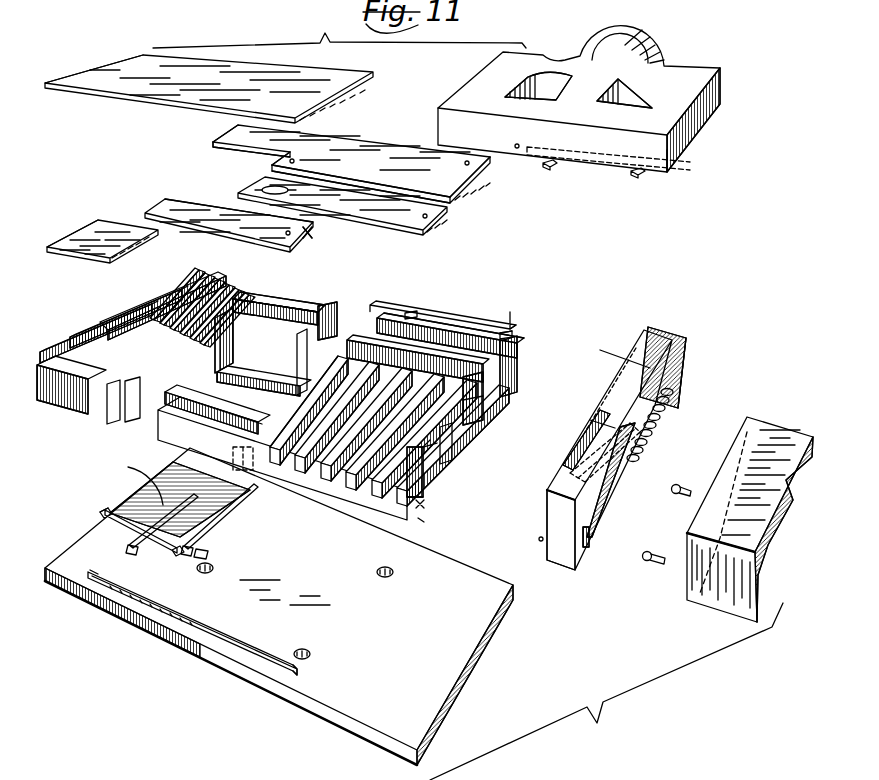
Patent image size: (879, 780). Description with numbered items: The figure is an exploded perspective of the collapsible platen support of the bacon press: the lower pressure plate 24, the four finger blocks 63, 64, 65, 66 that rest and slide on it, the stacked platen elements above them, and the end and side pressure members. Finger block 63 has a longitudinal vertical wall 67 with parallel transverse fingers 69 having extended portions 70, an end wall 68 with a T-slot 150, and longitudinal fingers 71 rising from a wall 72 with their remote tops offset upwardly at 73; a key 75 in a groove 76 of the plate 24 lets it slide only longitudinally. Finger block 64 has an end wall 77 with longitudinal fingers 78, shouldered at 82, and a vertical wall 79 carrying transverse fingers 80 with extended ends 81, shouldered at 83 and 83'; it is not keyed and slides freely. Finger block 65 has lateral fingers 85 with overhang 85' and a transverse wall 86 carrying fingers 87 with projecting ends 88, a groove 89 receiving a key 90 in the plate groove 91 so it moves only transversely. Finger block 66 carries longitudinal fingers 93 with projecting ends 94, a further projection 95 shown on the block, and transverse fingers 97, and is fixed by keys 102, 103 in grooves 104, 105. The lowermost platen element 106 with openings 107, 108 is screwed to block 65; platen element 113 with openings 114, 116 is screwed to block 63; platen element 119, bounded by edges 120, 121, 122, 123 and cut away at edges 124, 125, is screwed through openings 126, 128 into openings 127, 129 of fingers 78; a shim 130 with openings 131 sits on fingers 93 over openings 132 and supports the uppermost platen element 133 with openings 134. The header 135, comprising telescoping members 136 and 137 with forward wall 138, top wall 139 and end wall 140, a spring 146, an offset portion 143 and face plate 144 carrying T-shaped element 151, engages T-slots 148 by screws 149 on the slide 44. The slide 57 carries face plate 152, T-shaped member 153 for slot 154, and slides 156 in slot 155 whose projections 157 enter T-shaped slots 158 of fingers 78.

The lower pressure plate 24 is at (279, 606).
The plate 44 is at (720, 606).
The slide 57 is at (579, 99).
The finger block 63 is at (424, 504).
The finger block 64 is at (517, 365).
The finger block 65 is at (238, 290).
The finger block 66 is at (92, 421).
The vertical wall 67 is at (417, 500).
The end wall 68 is at (427, 480).
The fingers 69 is at (437, 443).
The extended portion 70 is at (430, 440).
The fingers 71 is at (175, 410).
The wall 72 is at (233, 452).
The offset 73 is at (214, 406).
The key 75 is at (263, 647).
The groove 76 is at (293, 663).
The end wall 77 is at (516, 330).
The fingers 78 is at (450, 323).
The vertical wall 79 is at (483, 392).
The fingers 80 is at (483, 405).
The extended end 81 is at (455, 428).
The shoulder 82 is at (403, 308).
The shoulder 83 is at (393, 401).
The shoulder 83' is at (317, 377).
The fingers 85 is at (202, 295).
The overhang 85' is at (166, 297).
The transverse wall 86 is at (222, 344).
The fingers 87 is at (285, 306).
The projecting ends 88 is at (332, 312).
The groove 89 is at (222, 355).
The key 90 is at (227, 515).
The groove 91 is at (207, 550).
The fingers 93 is at (87, 345).
The projecting ends 94 is at (125, 405).
The post 95 is at (107, 390).
The fingers 97 is at (140, 313).
The key 102 is at (107, 517).
The key 103 is at (163, 480).
The groove 104 is at (127, 527).
The groove 105 is at (190, 507).
The platen element 106 is at (165, 200).
The opening 107 is at (186, 200).
The openings 108 is at (306, 232).
The platen element 113 is at (436, 226).
The opening 114 is at (432, 216).
The openings 116 is at (291, 193).
The platen element 119 is at (478, 178).
The inner edge 120 is at (377, 185).
The outer edge 121 is at (388, 143).
The end edge 122 is at (460, 186).
The end edge 123 is at (215, 135).
The longitudinal edge 124 is at (224, 144).
The transverse edge 125 is at (277, 159).
The openings 126 is at (464, 163).
The openings 127 is at (514, 329).
The openings 128 is at (296, 161).
The openings 129 is at (436, 318).
The shim 130 is at (108, 222).
The openings 131 is at (80, 223).
The openings 132 is at (55, 366).
The platen element 133 is at (125, 51).
The openings 134 is at (72, 80).
The header 135 is at (640, 350).
The member 136 is at (561, 574).
The member 137 is at (676, 332).
The forward wall 138 is at (598, 420).
The top wall 139 is at (628, 378).
The end wall 140 is at (686, 365).
The offset portion 143 is at (562, 480).
The face plate 144 is at (545, 508).
The compression spring 146 is at (655, 420).
The T-slots 148 is at (615, 505).
The screws 149 is at (678, 485).
The T-slot 150 is at (422, 520).
The T-shaped element 151 is at (539, 540).
The face plate 152 is at (633, 139).
The T-shaped member 153 is at (460, 148).
The T-shaped vertical slot 154 is at (268, 292).
The elongated slot 155 is at (615, 150).
The slides 156 is at (625, 165).
The T-shaped projections 157 is at (553, 168).
The T-shaped slot 158 is at (418, 308).